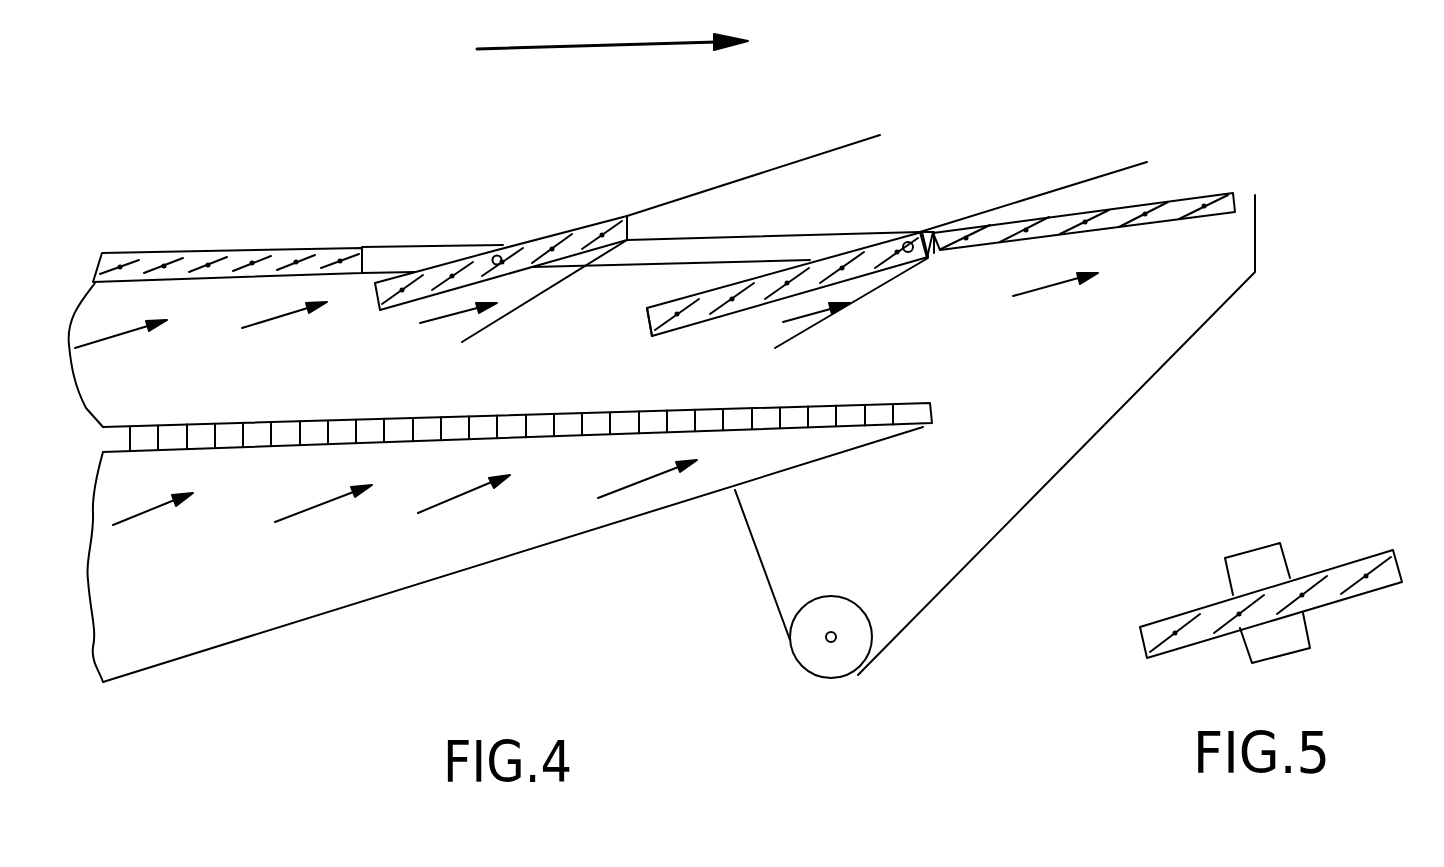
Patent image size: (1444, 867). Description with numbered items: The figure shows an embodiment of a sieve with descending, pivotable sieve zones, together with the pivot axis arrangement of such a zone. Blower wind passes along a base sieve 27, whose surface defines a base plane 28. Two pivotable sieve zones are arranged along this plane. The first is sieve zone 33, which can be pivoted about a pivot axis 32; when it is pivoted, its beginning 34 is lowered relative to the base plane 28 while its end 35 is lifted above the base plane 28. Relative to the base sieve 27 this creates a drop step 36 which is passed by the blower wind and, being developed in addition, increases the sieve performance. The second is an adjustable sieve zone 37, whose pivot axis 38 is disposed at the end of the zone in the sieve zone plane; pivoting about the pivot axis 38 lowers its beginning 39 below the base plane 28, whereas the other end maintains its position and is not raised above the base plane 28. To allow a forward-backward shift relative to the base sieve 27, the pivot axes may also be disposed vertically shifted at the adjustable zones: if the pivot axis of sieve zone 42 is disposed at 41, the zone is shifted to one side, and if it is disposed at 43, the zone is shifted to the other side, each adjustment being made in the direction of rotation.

In FIG. 4, the base sieve 27 is at (265, 262).
In FIG. 4, the base plane 28 is at (757, 240).
In FIG. 4, the pivot axis 32 is at (500, 254).
In FIG. 4, the sieve zone 33 is at (560, 248).
In FIG. 4, the beginning 34 is at (386, 292).
In FIG. 4, the end 35 is at (638, 224).
In FIG. 4, the drop step 36 is at (355, 278).
In FIG. 4, the adjustable sieve zone 37 is at (845, 258).
In FIG. 4, the pivot axis 38 is at (918, 231).
In FIG. 4, the beginning 39 is at (647, 320).
In FIG. 5, the pivot axis position 41 is at (1257, 563).
In FIG. 5, the sieve zone 42 is at (1387, 583).
In FIG. 5, the pivot axis position 43 is at (1277, 645).